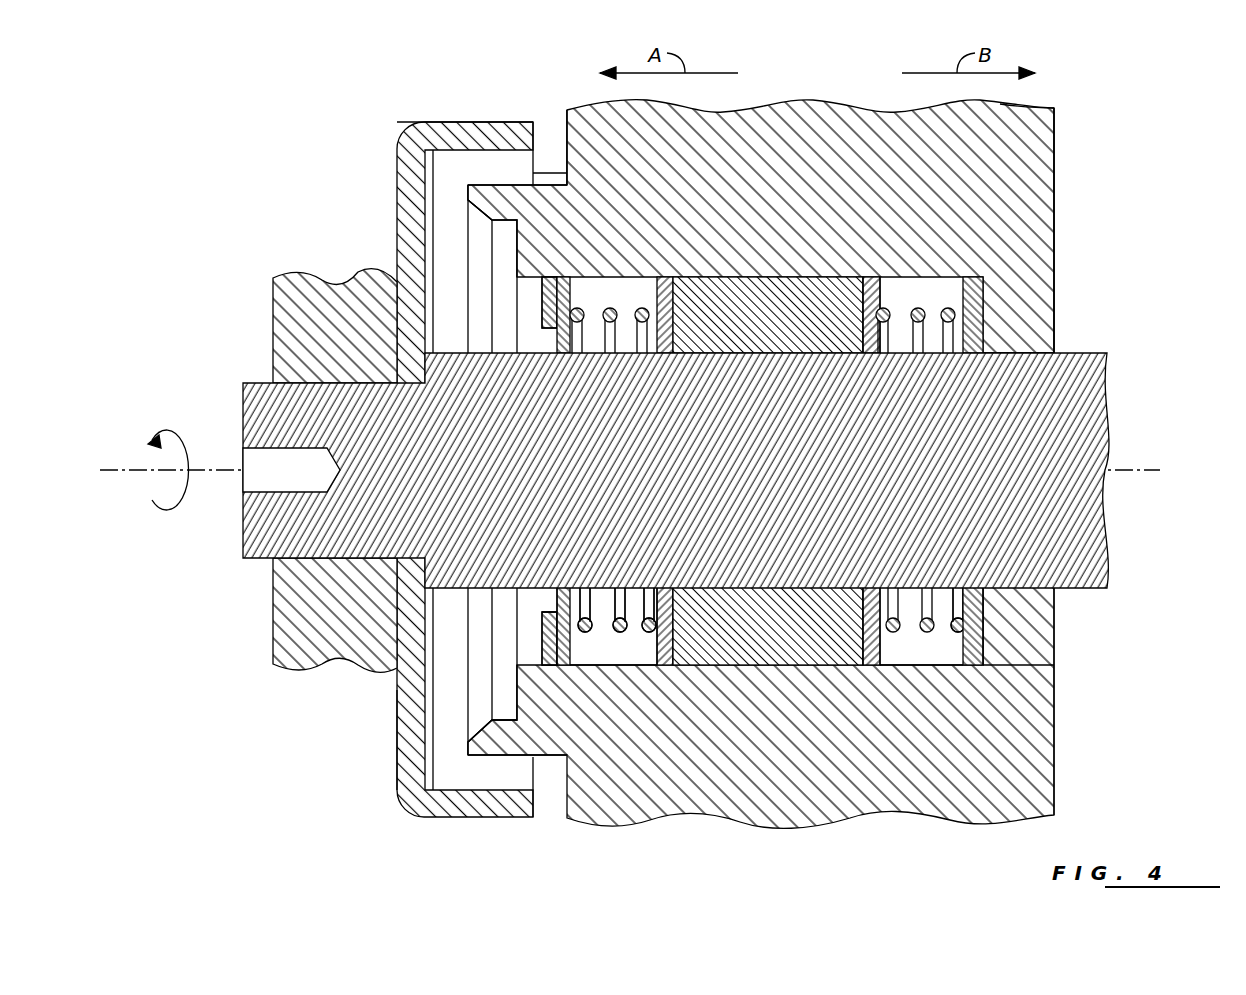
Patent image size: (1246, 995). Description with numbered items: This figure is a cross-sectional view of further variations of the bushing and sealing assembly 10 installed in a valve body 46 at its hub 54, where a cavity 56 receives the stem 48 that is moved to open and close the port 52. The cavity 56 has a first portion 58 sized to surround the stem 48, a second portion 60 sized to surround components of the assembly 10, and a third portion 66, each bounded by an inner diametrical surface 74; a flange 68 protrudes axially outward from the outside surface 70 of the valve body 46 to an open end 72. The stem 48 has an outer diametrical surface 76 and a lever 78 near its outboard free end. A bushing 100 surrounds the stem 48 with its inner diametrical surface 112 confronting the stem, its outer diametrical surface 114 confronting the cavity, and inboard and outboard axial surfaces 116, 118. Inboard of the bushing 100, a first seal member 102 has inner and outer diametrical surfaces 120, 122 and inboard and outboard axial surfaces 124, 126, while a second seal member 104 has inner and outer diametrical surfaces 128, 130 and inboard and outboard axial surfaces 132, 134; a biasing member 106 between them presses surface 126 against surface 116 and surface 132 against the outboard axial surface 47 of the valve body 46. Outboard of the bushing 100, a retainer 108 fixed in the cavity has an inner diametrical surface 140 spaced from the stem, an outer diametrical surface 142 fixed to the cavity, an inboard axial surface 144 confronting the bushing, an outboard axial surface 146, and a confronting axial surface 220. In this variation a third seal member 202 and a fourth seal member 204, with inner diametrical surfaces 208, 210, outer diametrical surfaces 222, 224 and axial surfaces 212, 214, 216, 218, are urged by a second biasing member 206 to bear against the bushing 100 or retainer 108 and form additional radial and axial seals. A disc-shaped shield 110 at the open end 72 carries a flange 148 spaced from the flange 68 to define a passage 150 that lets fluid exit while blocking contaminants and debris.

The bushing and sealing assembly 10 is at (995, 250).
The valve body 46 is at (1035, 123).
The outboard axial surface of valve body 47 is at (983, 620).
The stem 48 is at (1073, 367).
The port 52 is at (1055, 175).
The hub 54 is at (850, 110).
The cavity 56 is at (925, 280).
The first portion 58 is at (1053, 593).
The second portion 60 is at (945, 666).
The third portion 66 is at (500, 722).
The flange 68 is at (470, 198).
The outside surface 70 is at (567, 140).
The open end 72 is at (480, 205).
The inner diametrical surface 74 is at (615, 667).
The outer diametrical surface 76 is at (1047, 352).
The lever 78 is at (292, 325).
The bushing 100 is at (758, 668).
The first seal member 102 is at (860, 625).
The second seal member 104 is at (928, 595).
The biasing member 106 is at (893, 665).
The retainer 108 is at (540, 613).
The shield 110 is at (400, 760).
The inner diametrical surface of bushing 112 is at (678, 333).
The outer diametrical surface of bushing 114 is at (683, 280).
The inboard axial surface of bushing 116 is at (880, 303).
The outboard axial surface of bushing 118 is at (672, 295).
The inner diametrical surface of first seal member 120 is at (885, 330).
The outer diametrical surface of first seal member 122 is at (868, 285).
The inboard axial surface of first seal member 124 is at (890, 353).
The outboard axial surface of first seal member 126 is at (860, 317).
The inner diametrical surface of second seal member 128 is at (968, 592).
The outer diametrical surface of second seal member 130 is at (973, 666).
The inboard axial surface of second seal member 132 is at (980, 650).
The outboard axial surface of second seal member 134 is at (963, 605).
The inner diametrical surface of retainer 140 is at (548, 329).
The outer diametrical surface of retainer 142 is at (548, 277).
The inboard axial surface of retainer 144 is at (542, 305).
The outboard axial surface of retainer 146 is at (542, 316).
The flange of shield 148 is at (527, 137).
The passage 150 is at (517, 167).
The third seal member 202 is at (612, 620).
The fourth seal member 204 is at (560, 600).
The second biasing member 206 is at (632, 630).
The inner diametrical surface of third seal member 208 is at (650, 600).
The inner diametrical surface of fourth seal member 210 is at (570, 610).
The axial surface of third seal member 212 is at (673, 630).
The axial surface of third seal member 214 is at (673, 633).
The axial surface of fourth seal member 216 is at (628, 668).
The axial surface of fourth seal member 218 is at (590, 668).
The confronting axial surface of retainer 220 is at (540, 638).
The outer diametrical surface of third seal member 222 is at (660, 667).
The outer diametrical surface of fourth seal member 224 is at (568, 665).